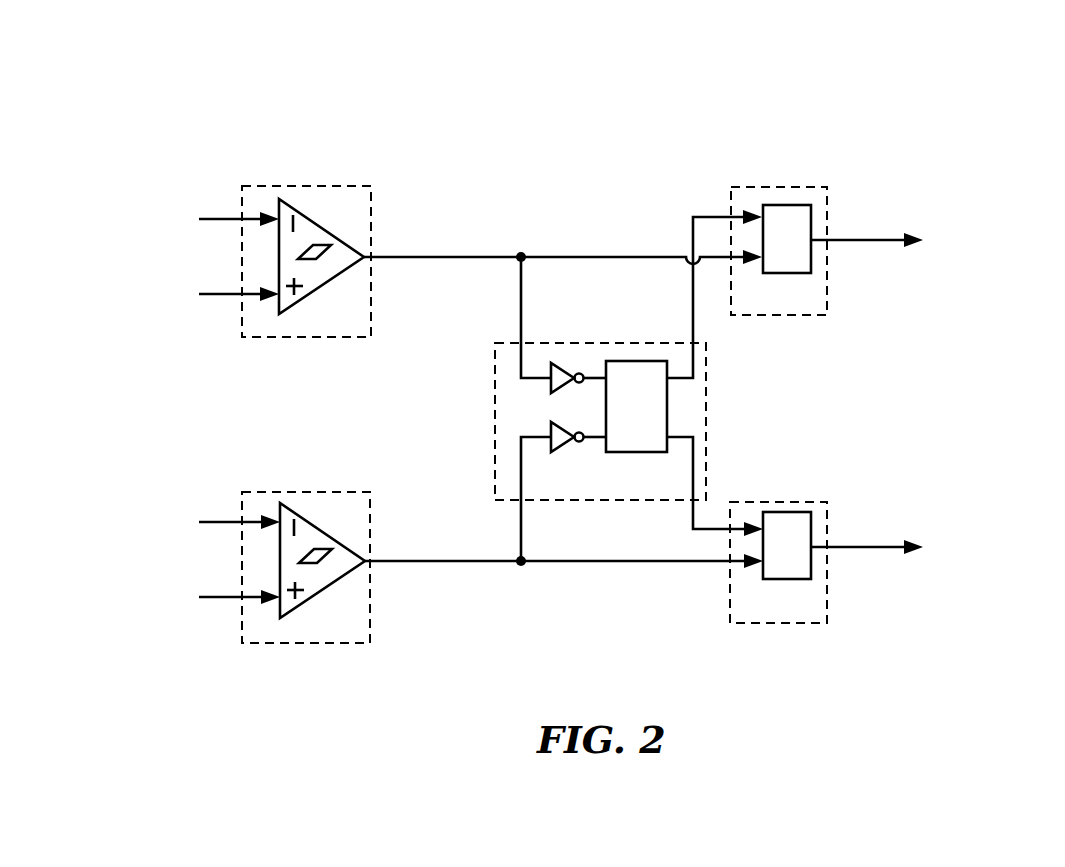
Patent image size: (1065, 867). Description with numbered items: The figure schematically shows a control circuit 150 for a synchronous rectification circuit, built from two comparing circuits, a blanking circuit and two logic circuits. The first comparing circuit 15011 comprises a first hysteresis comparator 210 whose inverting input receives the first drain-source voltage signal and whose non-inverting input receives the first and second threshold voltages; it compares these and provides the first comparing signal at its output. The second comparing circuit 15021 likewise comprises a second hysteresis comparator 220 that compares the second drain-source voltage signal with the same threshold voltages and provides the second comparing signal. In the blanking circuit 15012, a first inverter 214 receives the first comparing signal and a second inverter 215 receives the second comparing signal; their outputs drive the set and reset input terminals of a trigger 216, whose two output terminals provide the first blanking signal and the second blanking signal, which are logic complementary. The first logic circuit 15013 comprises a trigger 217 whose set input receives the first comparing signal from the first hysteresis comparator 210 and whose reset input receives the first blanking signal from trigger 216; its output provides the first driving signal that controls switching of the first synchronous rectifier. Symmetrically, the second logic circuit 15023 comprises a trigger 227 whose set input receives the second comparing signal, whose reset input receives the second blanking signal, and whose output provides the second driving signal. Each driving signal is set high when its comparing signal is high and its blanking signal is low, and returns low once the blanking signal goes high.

The control circuit 150 is at (953, 157).
The first comparing circuit 15011 is at (371, 207).
The blanking circuit 15012 is at (706, 417).
The first logic circuit 15013 is at (827, 206).
The second comparing circuit 15021 is at (370, 517).
The second logic circuit 15023 is at (827, 520).
The first hysteresis comparator 210 is at (325, 280).
The second hysteresis comparator 220 is at (325, 588).
The first inverter 214 is at (558, 388).
The second inverter 215 is at (558, 447).
The trigger 216 is at (632, 452).
The trigger 217 is at (792, 270).
The trigger 227 is at (782, 579).